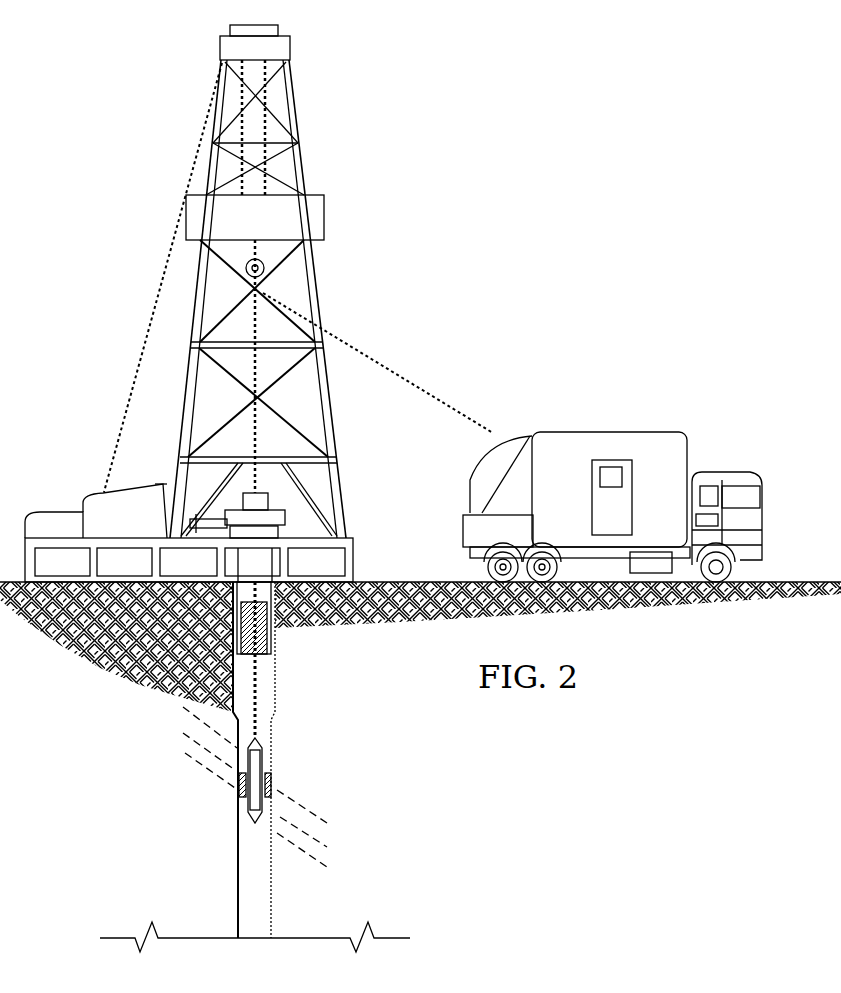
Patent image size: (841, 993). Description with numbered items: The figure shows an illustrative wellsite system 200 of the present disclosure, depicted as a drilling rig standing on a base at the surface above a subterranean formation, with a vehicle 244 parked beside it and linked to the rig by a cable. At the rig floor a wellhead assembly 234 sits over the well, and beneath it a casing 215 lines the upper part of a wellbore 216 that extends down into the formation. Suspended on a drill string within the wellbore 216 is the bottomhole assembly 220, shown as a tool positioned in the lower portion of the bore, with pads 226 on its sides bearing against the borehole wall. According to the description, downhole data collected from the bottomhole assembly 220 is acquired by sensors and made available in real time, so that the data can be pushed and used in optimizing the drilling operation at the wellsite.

The drilling system 200 is at (500, 222).
The truck / control unit 244 is at (612, 432).
The wellhead 234 is at (270, 503).
The casing 215 is at (271, 645).
The wellbore 216 is at (271, 695).
The bottomhole assembly 220 is at (253, 768).
The anchor pads 226 is at (236, 782).